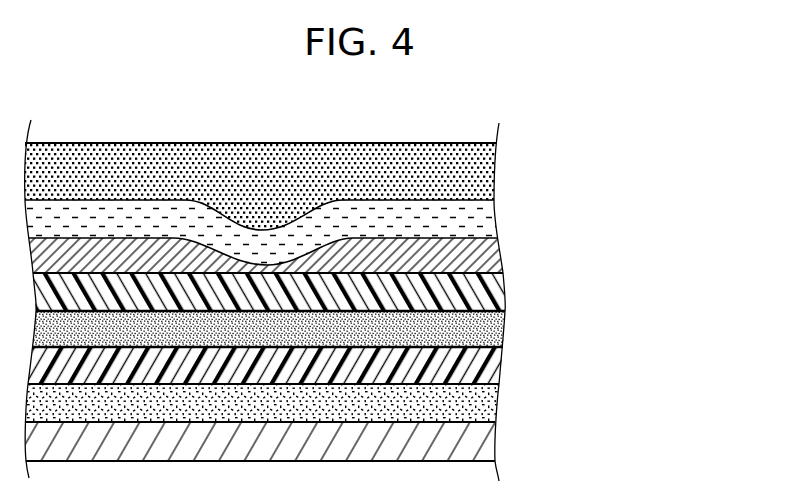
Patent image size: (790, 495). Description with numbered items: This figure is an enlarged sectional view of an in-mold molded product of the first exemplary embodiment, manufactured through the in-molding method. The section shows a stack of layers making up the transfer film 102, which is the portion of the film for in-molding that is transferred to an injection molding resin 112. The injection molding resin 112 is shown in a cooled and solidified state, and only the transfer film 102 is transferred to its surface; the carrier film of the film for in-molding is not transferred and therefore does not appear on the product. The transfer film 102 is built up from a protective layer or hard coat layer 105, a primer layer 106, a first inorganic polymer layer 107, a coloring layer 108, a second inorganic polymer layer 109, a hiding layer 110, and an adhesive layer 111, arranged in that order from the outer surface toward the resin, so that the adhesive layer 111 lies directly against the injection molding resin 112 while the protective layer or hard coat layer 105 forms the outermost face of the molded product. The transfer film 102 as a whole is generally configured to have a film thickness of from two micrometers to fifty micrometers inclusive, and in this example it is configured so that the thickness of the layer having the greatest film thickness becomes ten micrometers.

The transfer film 102 is at (393, 330).
The protective layer or hard coat layer 105 is at (343, 441).
The primer layer 106 is at (492, 402).
The first inorganic polymer layer 107 is at (500, 362).
The coloring layer 108 is at (503, 330).
The second inorganic polymer layer 109 is at (500, 292).
The hiding layer 110 is at (498, 262).
The adhesive layer 111 is at (488, 222).
The injection molding resin 112 is at (487, 162).